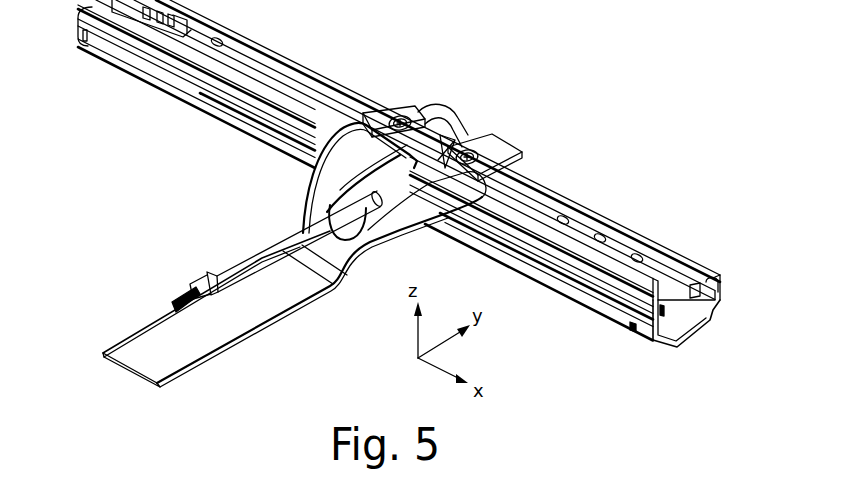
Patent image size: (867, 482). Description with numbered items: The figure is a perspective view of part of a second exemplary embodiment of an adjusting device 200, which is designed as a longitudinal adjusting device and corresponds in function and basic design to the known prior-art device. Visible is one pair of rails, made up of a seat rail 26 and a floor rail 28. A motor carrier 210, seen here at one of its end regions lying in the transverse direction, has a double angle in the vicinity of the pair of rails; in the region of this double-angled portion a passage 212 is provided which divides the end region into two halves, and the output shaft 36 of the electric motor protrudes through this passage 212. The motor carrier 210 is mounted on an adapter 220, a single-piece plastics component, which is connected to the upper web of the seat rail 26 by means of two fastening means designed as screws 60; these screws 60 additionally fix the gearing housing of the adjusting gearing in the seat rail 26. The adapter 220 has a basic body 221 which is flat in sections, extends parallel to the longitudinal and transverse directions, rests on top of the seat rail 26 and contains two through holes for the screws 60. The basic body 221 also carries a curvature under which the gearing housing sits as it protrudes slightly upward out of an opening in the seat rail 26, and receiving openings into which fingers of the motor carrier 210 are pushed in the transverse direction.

The adjusting device 200 is at (568, 138).
The seat rail 26 is at (725, 283).
The floor rail 28 is at (682, 323).
The adapter 220 is at (438, 140).
The basic body 221 is at (492, 160).
The screw 60 is at (402, 120).
The passage 212 is at (310, 196).
The output shaft 36 is at (228, 270).
The motor carrier 210 is at (190, 343).